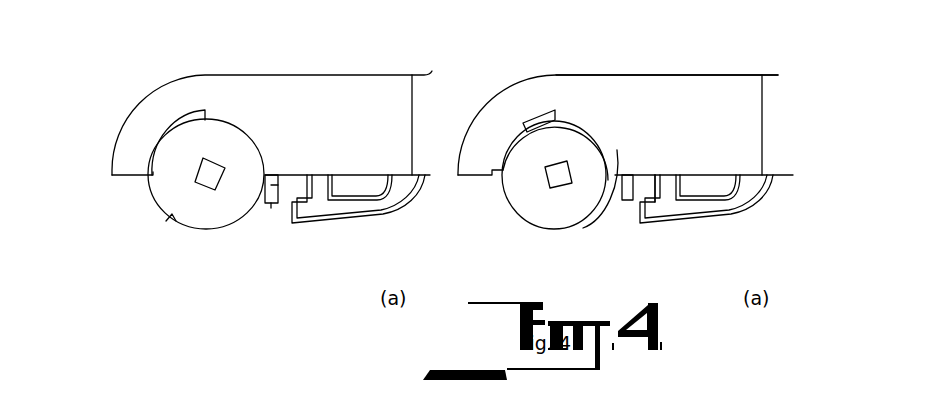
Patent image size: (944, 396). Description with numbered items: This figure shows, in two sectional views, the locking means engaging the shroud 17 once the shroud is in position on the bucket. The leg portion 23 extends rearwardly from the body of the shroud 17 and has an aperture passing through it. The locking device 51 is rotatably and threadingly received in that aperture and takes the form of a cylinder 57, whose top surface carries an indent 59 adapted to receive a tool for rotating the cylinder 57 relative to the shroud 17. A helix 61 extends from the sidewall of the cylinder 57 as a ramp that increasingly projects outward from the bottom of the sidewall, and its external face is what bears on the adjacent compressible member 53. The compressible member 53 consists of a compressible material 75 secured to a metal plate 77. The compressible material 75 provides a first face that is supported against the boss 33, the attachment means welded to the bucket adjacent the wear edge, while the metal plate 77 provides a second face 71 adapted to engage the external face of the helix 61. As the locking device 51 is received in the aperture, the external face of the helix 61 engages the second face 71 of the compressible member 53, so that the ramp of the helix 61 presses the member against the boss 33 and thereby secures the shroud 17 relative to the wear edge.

The shroud 17 is at (745, 131).
The leg portion 23 is at (738, 100).
The boss 33 is at (317, 180).
The locking device 51 is at (184, 144).
The compressible member 53 is at (290, 185).
The cylinder 57 is at (166, 191).
The indent 59 is at (195, 171).
The helix 61 is at (596, 184).
The second face 71 is at (271, 188).
The compressible material 75 is at (663, 180).
The metal plate 77 is at (276, 204).